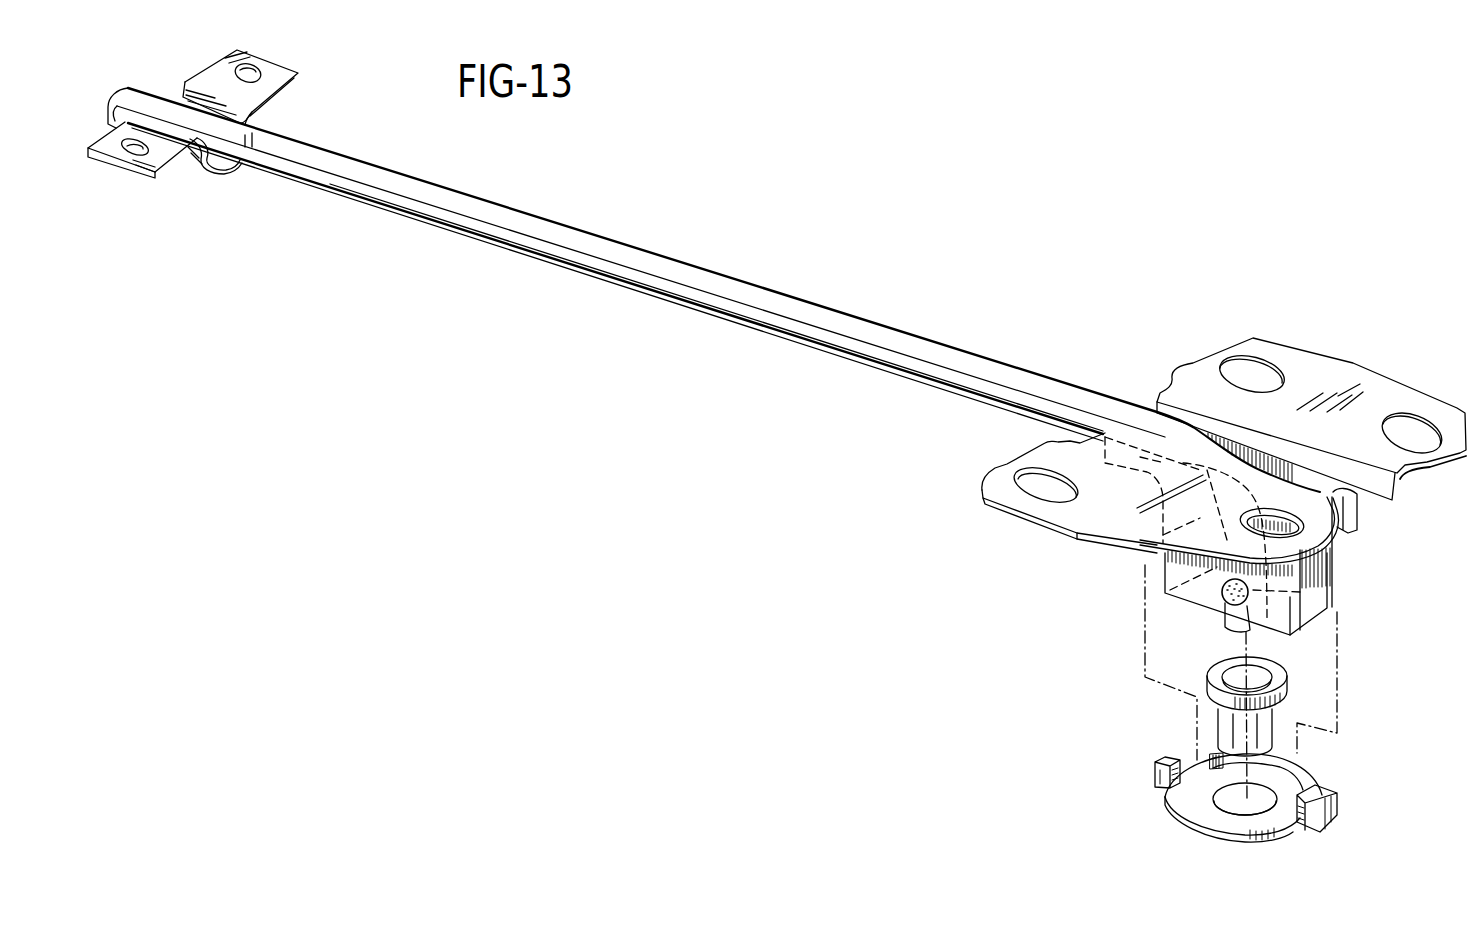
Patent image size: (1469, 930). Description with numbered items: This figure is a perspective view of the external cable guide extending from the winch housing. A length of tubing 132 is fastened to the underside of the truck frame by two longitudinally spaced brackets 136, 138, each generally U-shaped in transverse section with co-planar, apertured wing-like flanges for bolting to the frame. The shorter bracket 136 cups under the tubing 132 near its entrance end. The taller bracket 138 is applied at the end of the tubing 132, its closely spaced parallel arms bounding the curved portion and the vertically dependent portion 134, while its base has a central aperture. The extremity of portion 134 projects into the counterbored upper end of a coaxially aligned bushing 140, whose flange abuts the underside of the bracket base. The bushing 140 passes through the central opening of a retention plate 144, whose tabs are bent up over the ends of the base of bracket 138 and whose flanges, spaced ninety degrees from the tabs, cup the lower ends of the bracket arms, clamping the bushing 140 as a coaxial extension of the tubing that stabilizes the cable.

The tubing 132 is at (541, 216).
The vertically dependent portion of the tubing 134 is at (1142, 553).
The bracket 136 is at (298, 74).
The bracket 138 is at (1334, 567).
The bushing 140 is at (1214, 673).
The retention plate 144 is at (1179, 753).